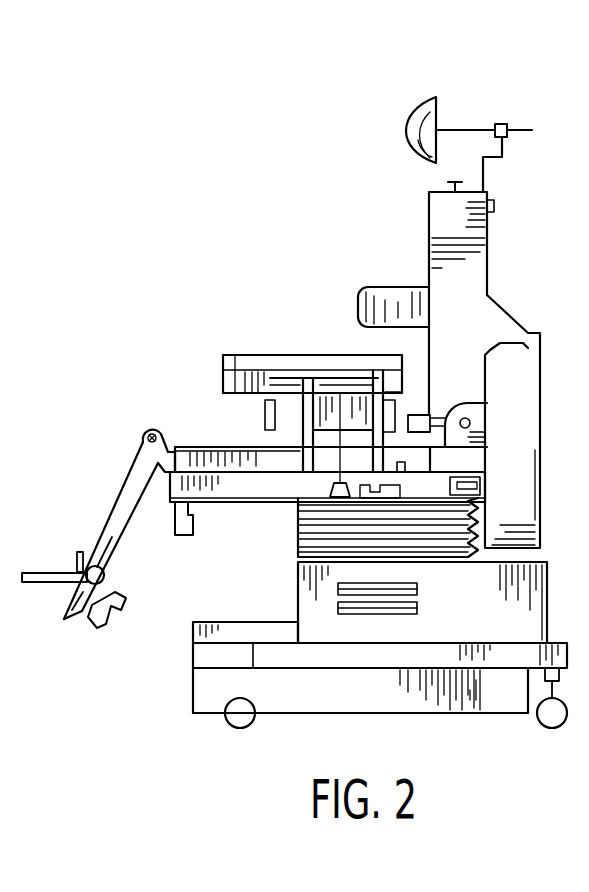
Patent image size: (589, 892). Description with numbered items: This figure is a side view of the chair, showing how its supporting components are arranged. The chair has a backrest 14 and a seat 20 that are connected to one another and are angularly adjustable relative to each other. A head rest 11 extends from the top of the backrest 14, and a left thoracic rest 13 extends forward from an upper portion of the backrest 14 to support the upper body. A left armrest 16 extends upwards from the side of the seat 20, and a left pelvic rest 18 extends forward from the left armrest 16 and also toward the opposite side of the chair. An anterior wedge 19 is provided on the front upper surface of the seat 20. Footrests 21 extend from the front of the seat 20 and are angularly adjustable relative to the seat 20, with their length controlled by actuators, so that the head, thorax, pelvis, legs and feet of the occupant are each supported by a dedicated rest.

The head rest 11 is at (416, 126).
The left thoracic rest 13 is at (388, 304).
The backrest 14 is at (455, 232).
The left armrest 16 is at (246, 385).
The left pelvic rest 18 is at (330, 420).
The anterior wedge 19 is at (222, 458).
The seat 20 is at (232, 448).
The footrests 21 is at (130, 497).